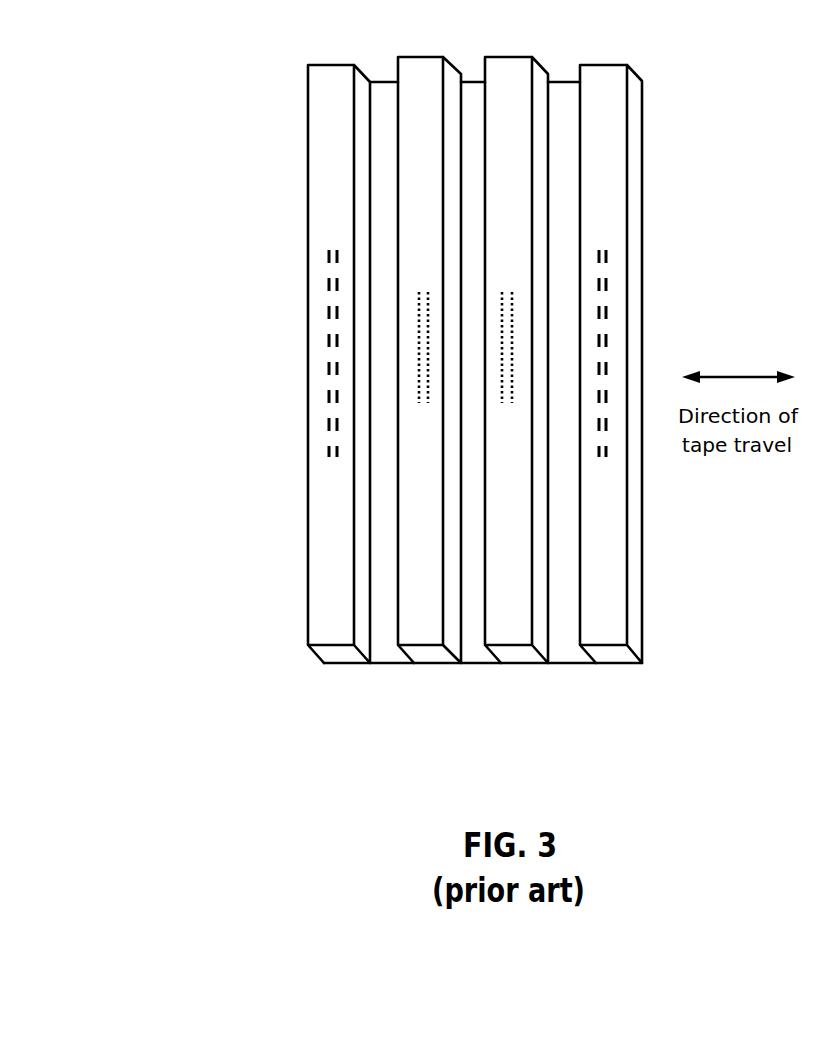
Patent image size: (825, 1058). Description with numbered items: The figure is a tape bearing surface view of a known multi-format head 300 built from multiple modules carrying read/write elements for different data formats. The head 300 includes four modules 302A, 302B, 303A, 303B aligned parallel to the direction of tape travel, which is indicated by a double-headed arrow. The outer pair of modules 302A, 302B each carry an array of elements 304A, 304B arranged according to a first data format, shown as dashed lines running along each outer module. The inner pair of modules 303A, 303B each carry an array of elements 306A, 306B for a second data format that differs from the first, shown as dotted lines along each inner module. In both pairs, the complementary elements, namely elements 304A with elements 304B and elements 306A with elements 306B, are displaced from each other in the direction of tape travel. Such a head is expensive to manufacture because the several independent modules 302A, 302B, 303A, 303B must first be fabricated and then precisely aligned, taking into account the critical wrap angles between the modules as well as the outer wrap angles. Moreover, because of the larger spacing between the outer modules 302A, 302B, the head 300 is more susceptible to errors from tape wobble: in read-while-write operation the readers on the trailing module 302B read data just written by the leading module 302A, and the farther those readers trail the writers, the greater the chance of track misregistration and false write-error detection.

The multi-format head 300 is at (280, 155).
The outer module 302A is at (335, 653).
The outer module 302B is at (608, 653).
The inner module 303A is at (428, 653).
The inner module 303B is at (517, 653).
The array of elements 304A is at (306, 320).
The array of elements 304B is at (632, 275).
The array of elements 306A is at (398, 387).
The array of elements 306B is at (534, 409).